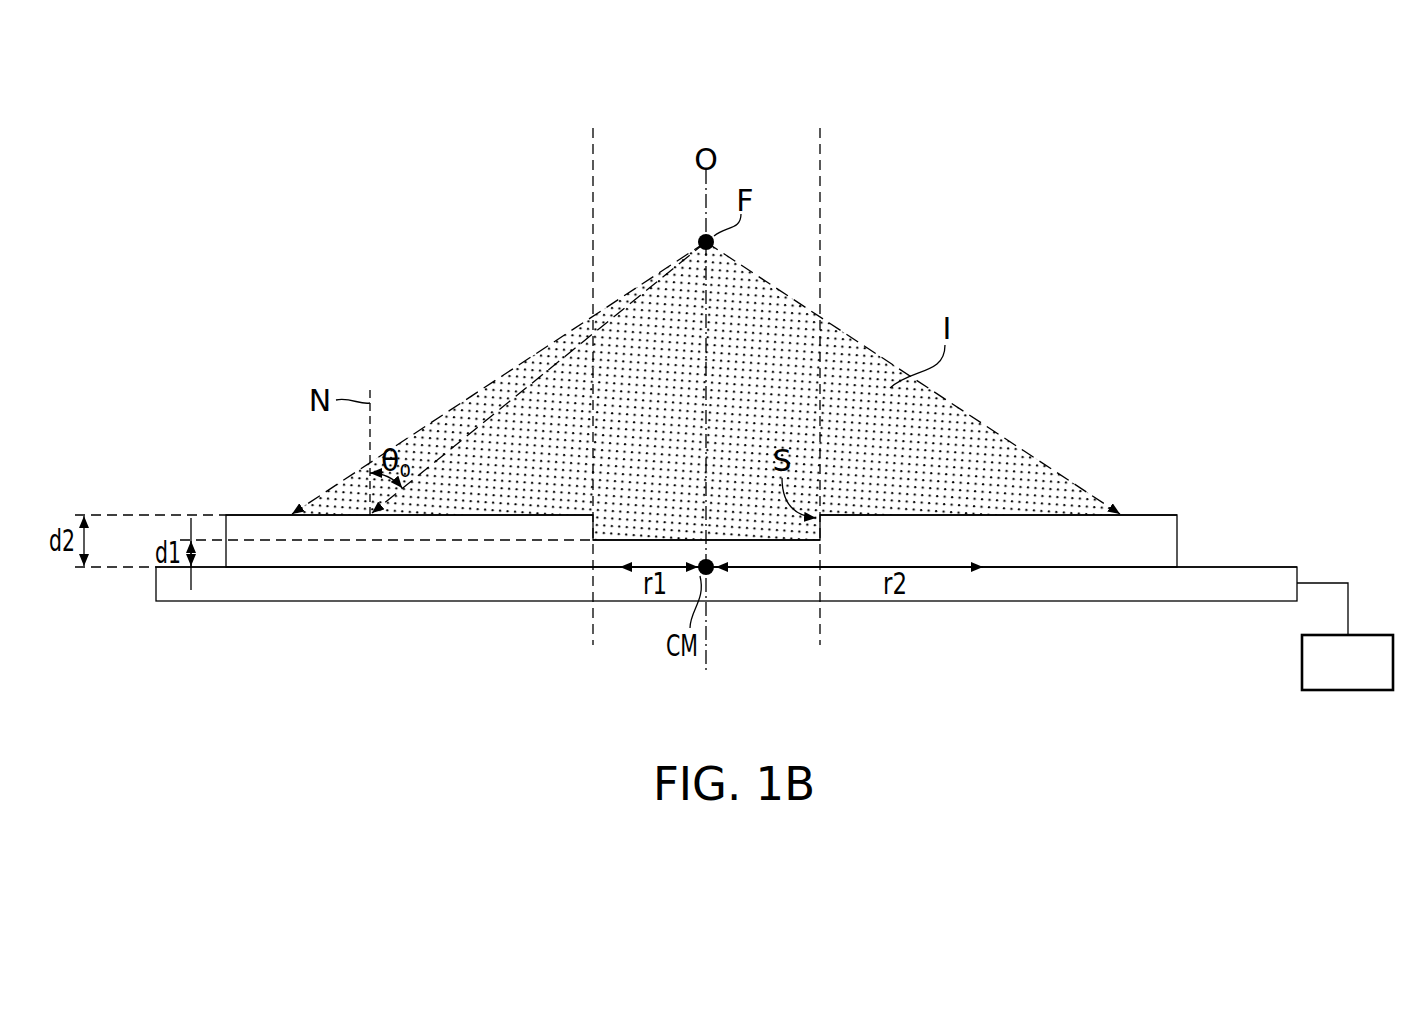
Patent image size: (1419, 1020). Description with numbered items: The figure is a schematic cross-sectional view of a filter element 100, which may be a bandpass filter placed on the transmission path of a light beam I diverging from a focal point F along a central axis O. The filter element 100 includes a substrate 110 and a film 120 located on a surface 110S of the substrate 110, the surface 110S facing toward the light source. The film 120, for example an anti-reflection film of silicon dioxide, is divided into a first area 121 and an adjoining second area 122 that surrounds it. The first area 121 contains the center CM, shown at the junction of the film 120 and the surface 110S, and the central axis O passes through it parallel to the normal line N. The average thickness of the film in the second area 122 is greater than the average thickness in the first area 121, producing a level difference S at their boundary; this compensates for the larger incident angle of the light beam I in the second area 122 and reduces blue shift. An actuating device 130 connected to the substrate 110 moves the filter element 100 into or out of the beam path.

The filter element 100 is at (1418, 750).
The substrate 110 is at (1212, 572).
The surface of the substrate 110S is at (1249, 563).
The film 120 is at (1151, 522).
The first area 121 is at (820, 128).
The second area 122 is at (593, 128).
The actuating device 130 is at (1300, 661).